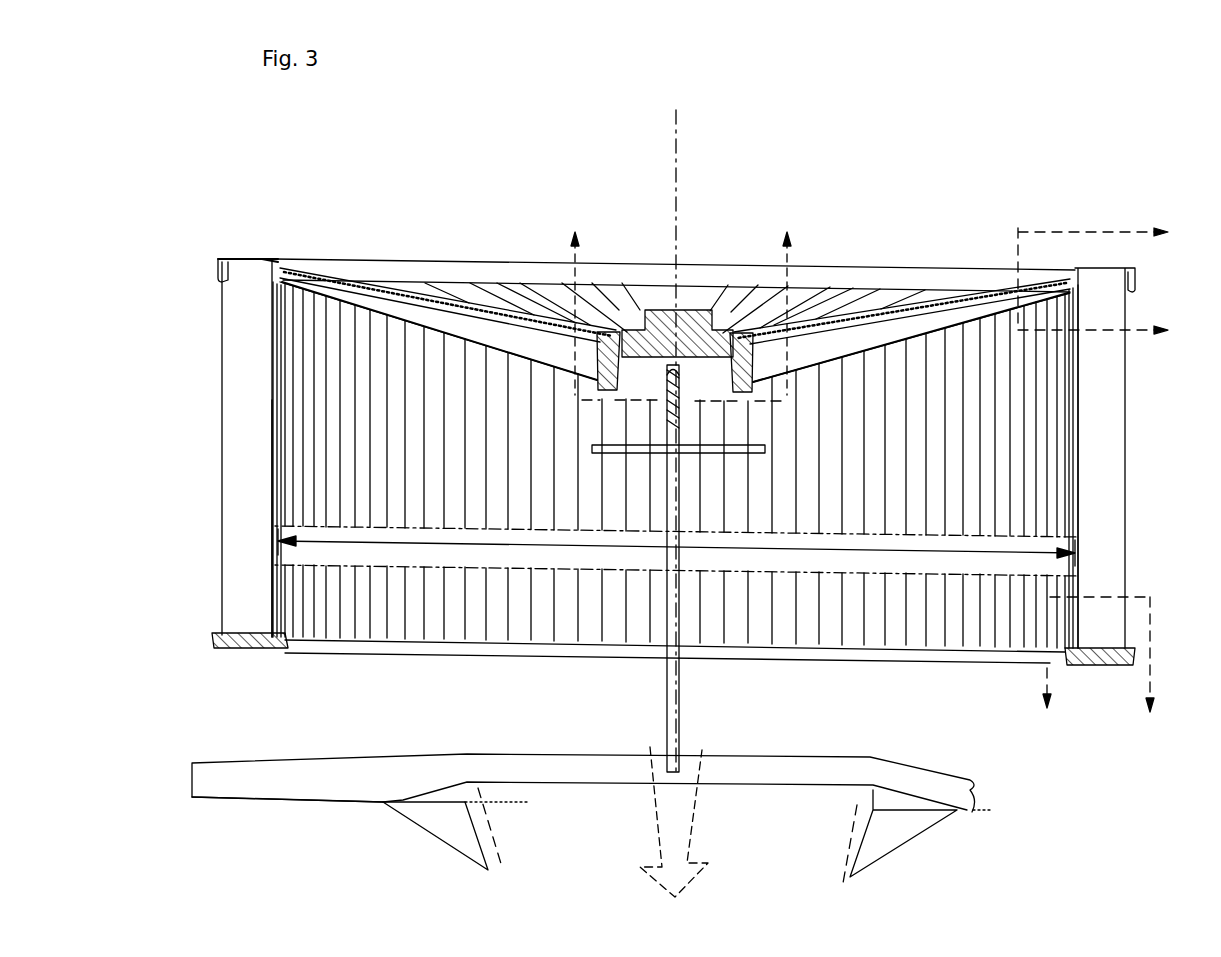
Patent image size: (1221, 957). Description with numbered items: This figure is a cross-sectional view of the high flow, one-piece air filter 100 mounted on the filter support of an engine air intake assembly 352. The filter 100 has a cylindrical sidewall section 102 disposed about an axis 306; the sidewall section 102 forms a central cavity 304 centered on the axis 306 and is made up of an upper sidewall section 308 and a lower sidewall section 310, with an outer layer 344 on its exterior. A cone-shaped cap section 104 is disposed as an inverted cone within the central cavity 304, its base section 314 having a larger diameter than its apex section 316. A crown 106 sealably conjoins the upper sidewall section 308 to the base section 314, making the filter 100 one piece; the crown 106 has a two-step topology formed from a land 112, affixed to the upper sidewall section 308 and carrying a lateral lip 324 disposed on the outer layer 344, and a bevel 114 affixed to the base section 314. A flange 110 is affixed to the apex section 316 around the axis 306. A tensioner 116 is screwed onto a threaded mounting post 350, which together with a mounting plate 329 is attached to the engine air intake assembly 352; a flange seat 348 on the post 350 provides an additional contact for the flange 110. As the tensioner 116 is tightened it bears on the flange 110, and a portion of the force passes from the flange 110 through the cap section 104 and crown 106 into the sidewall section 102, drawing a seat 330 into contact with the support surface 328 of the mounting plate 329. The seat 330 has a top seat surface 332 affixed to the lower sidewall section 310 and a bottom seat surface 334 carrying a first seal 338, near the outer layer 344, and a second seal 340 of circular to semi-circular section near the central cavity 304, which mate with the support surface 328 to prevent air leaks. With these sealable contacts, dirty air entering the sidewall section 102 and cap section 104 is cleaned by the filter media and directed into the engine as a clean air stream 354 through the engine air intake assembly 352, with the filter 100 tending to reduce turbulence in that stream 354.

The filter 100 is at (928, 160).
The sidewall section 102 is at (614, 485).
The cone-shaped cap section 104 is at (827, 310).
The crown 106 is at (471, 258).
The flange 110 is at (595, 350).
The land 112 is at (253, 257).
The bevel 114 is at (327, 265).
The tensioner 116 is at (665, 258).
The central cavity 304 is at (637, 550).
The axis 306 is at (682, 158).
The upper sidewall section 308 is at (211, 448).
The lower sidewall section 310 is at (237, 585).
The base section 314 is at (930, 293).
The apex section 316 is at (753, 262).
The lip 324 is at (222, 262).
The support surface 328 is at (579, 775).
The mounting plate 329 is at (248, 802).
The seat 330 is at (897, 662).
The top seat surface 332 is at (209, 624).
The bottom seat surface 334 is at (1095, 716).
The first seal 338 is at (217, 643).
The second seal 340 is at (1070, 667).
The outer layer 344 is at (1128, 468).
The flange seat 348 is at (700, 457).
The mounting post 350 is at (667, 670).
The engine air intake assembly 352 is at (413, 840).
The clean air stream 354 is at (690, 842).